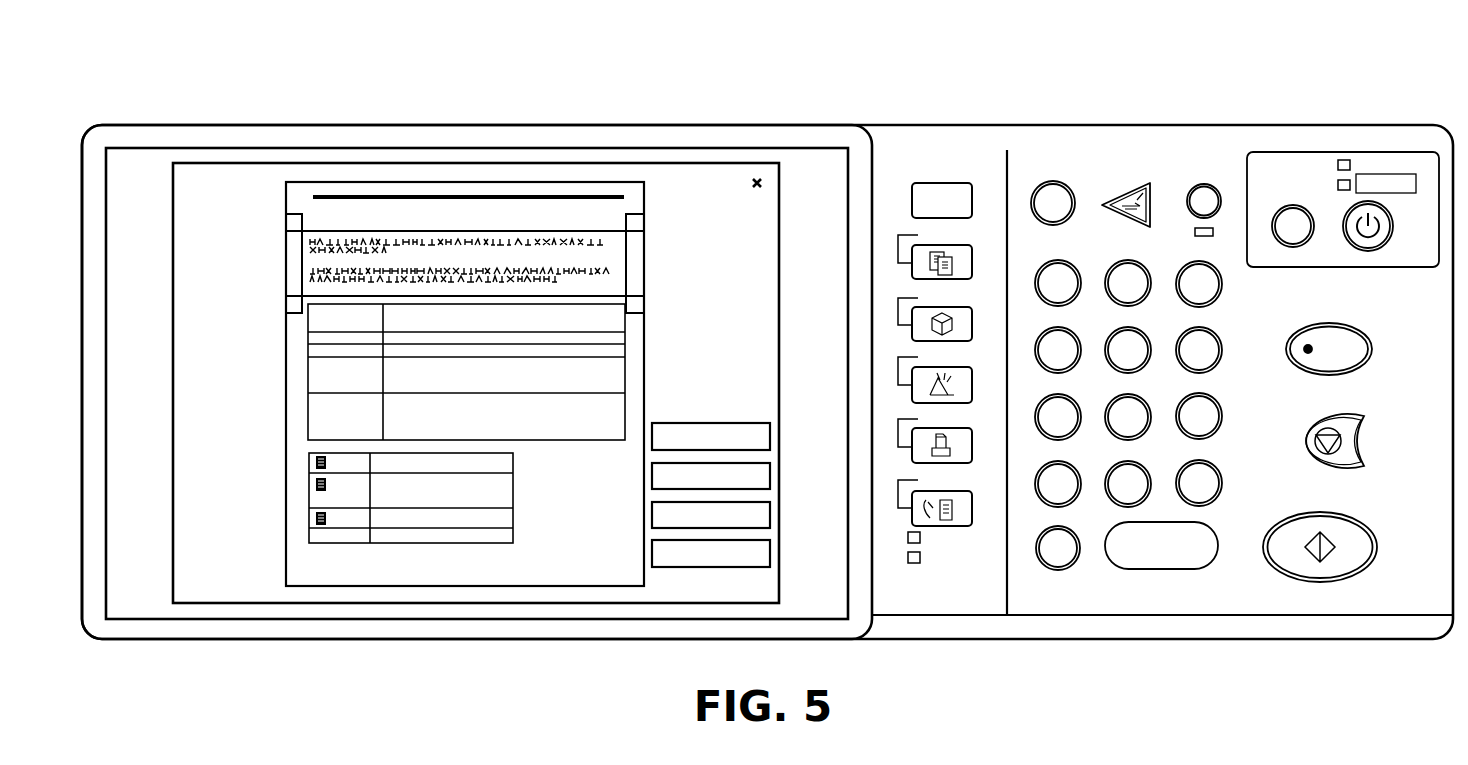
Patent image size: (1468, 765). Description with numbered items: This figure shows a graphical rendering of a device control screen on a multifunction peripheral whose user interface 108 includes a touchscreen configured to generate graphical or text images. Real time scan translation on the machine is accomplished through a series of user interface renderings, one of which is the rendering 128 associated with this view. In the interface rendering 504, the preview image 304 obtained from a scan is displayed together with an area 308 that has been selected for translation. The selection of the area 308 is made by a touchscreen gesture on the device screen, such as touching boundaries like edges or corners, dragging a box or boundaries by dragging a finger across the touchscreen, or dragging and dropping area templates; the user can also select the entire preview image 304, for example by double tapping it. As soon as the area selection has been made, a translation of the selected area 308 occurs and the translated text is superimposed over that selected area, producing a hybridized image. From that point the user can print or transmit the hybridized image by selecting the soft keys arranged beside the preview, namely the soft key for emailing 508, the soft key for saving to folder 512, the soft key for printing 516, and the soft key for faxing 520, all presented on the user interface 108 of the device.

The user interface 108 is at (1092, 127).
The user interface rendering 128 is at (1253, 103).
The preview image 304 is at (286, 548).
The selected area 308 is at (598, 243).
The interface rendering 504 is at (708, 177).
The emailing soft key 508 is at (652, 440).
The saving to folder soft key 512 is at (770, 477).
The printing soft key 516 is at (652, 515).
The faxing soft key 520 is at (732, 567).